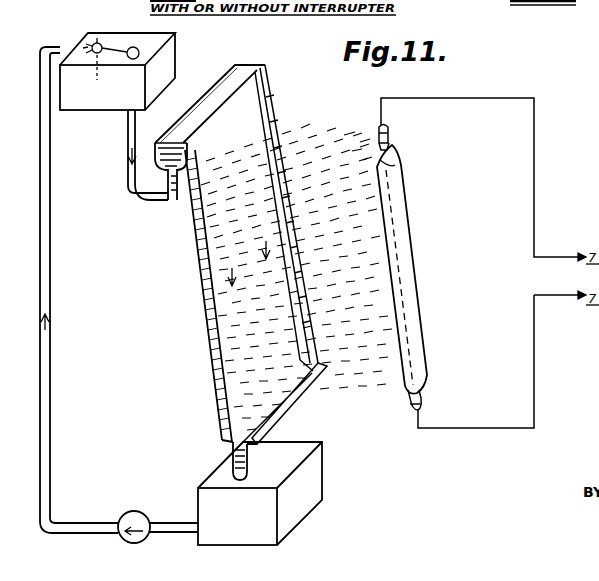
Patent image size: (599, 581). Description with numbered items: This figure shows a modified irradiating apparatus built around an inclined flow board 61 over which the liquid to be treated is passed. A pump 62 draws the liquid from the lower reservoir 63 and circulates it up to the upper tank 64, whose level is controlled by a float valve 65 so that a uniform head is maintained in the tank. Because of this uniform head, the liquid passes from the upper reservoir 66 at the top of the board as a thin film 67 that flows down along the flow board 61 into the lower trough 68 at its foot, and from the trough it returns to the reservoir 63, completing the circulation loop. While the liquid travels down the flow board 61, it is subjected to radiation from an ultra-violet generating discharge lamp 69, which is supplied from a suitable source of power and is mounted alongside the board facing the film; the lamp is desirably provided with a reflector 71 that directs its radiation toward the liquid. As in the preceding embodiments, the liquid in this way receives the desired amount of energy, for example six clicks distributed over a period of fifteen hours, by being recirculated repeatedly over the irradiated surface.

The flow board 61 is at (198, 253).
The pump 62 is at (150, 508).
The lower reservoir 63 is at (214, 483).
The upper tank 64 is at (102, 107).
The float valve 65 is at (97, 44).
The upper reservoir 66 is at (215, 96).
The thin film 67 is at (257, 113).
The lower trough 68 is at (277, 430).
The ultra-violet generating discharge lamp 69 is at (380, 133).
The reflector 71 is at (403, 203).